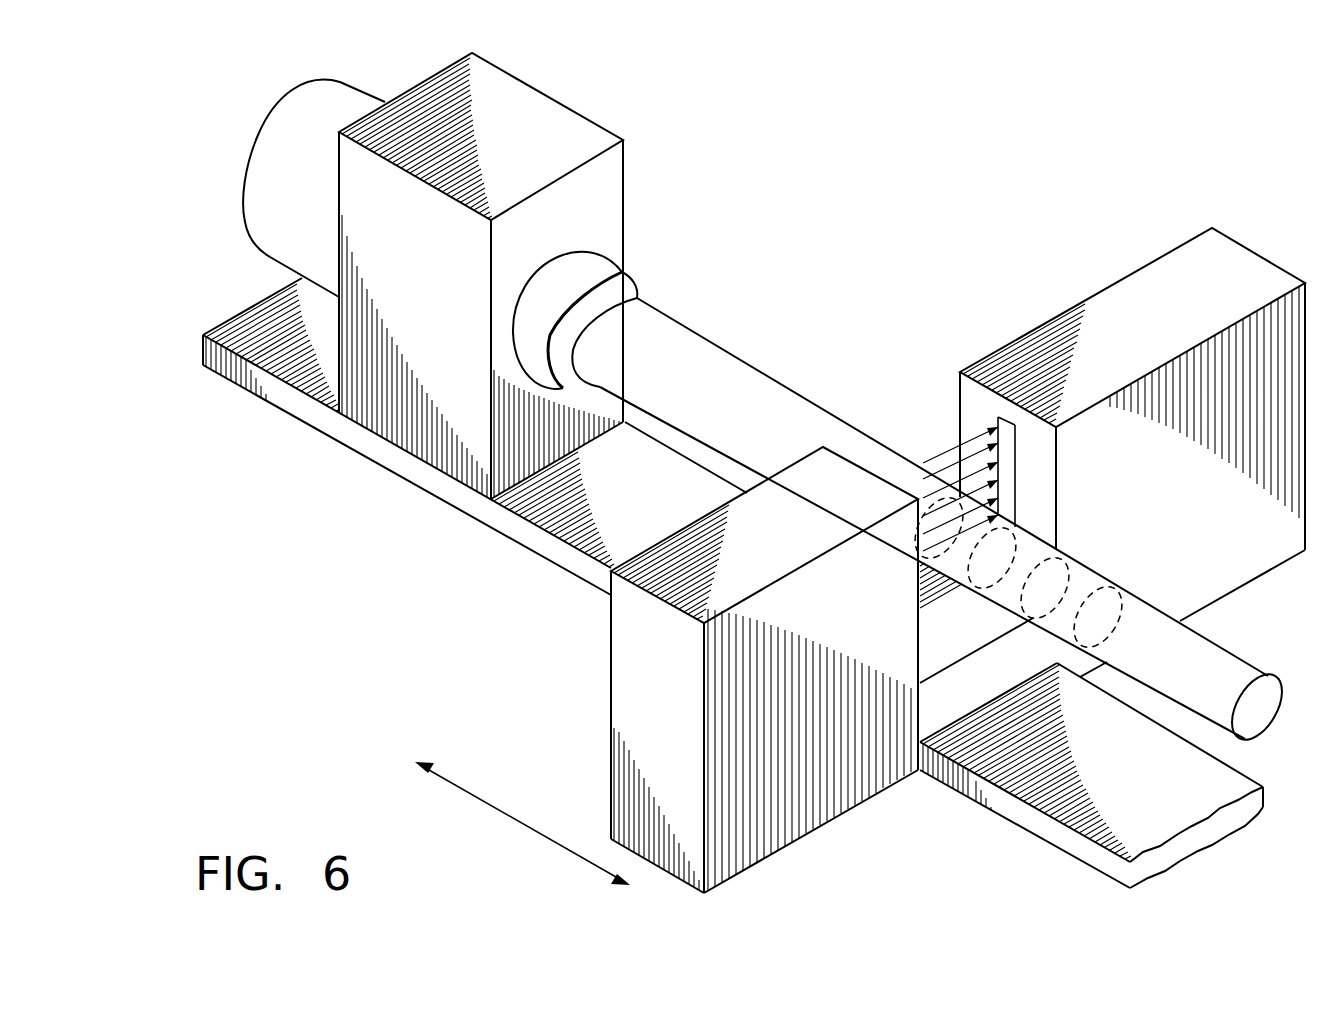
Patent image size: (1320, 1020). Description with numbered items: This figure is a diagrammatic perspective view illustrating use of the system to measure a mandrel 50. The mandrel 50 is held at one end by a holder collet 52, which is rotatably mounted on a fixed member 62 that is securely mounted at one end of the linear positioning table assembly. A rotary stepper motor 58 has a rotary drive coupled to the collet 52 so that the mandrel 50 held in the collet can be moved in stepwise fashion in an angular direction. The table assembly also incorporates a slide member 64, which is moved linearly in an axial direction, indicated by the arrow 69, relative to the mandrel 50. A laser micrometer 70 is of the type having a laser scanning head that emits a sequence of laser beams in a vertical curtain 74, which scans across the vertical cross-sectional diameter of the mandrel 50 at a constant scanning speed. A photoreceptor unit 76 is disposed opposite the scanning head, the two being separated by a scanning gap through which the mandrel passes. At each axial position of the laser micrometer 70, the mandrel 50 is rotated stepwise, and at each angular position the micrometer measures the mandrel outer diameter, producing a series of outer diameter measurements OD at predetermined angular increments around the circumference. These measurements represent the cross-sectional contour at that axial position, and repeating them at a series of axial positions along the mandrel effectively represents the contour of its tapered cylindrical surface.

The mandrel 50 is at (696, 325).
The holder collet 52 is at (587, 270).
The rotary stepper motor 58 is at (283, 183).
The fixed member 62 is at (428, 410).
The slide member 64 is at (632, 692).
The axial direction arrow 69 is at (502, 810).
The laser micrometer 70 is at (983, 310).
The vertical curtain of laser beams 74 is at (963, 425).
The photoreceptor unit 76 is at (1013, 445).
The outer diameter measurements OD is at (1113, 593).